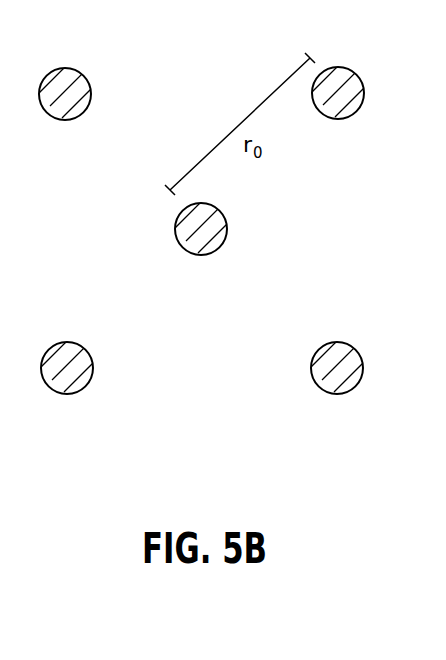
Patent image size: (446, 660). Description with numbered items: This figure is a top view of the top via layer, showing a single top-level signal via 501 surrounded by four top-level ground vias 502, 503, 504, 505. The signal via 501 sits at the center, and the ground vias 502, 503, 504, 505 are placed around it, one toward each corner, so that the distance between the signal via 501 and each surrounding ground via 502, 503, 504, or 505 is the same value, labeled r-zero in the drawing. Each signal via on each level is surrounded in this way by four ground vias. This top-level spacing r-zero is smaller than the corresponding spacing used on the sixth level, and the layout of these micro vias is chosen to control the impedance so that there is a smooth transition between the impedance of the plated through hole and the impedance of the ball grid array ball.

The signal via 501 is at (200, 255).
The ground via 502 is at (337, 119).
The ground via 503 is at (337, 394).
The ground via 504 is at (68, 394).
The ground via 505 is at (78, 72).